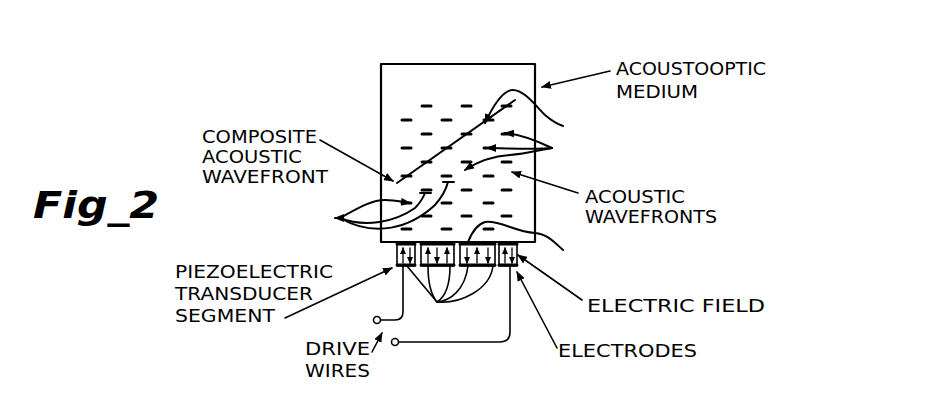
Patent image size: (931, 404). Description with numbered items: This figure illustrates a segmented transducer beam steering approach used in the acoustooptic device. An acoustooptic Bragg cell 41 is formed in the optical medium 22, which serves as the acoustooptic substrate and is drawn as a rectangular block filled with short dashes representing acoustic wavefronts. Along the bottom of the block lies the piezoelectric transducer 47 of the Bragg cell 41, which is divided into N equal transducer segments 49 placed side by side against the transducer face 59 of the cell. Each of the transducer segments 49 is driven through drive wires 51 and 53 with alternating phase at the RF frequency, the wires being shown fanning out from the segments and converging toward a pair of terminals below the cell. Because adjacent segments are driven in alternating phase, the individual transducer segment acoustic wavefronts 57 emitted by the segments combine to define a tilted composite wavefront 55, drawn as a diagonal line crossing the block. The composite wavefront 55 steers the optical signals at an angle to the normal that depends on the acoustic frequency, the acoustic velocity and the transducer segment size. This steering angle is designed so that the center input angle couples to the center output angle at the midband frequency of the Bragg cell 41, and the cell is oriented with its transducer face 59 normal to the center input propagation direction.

The optical medium 22 is at (468, 72).
The acoustooptic Bragg cell 41 is at (553, 22).
The piezoelectric transducer 47 is at (383, 283).
The transducer segments 49 is at (450, 293).
The drive wire 51 is at (403, 313).
The drive wire 53 is at (428, 345).
The composite wavefront 55 is at (538, 112).
The transducer segment acoustic wavefronts 57 is at (441, 184).
The transducer face 59 is at (529, 242).